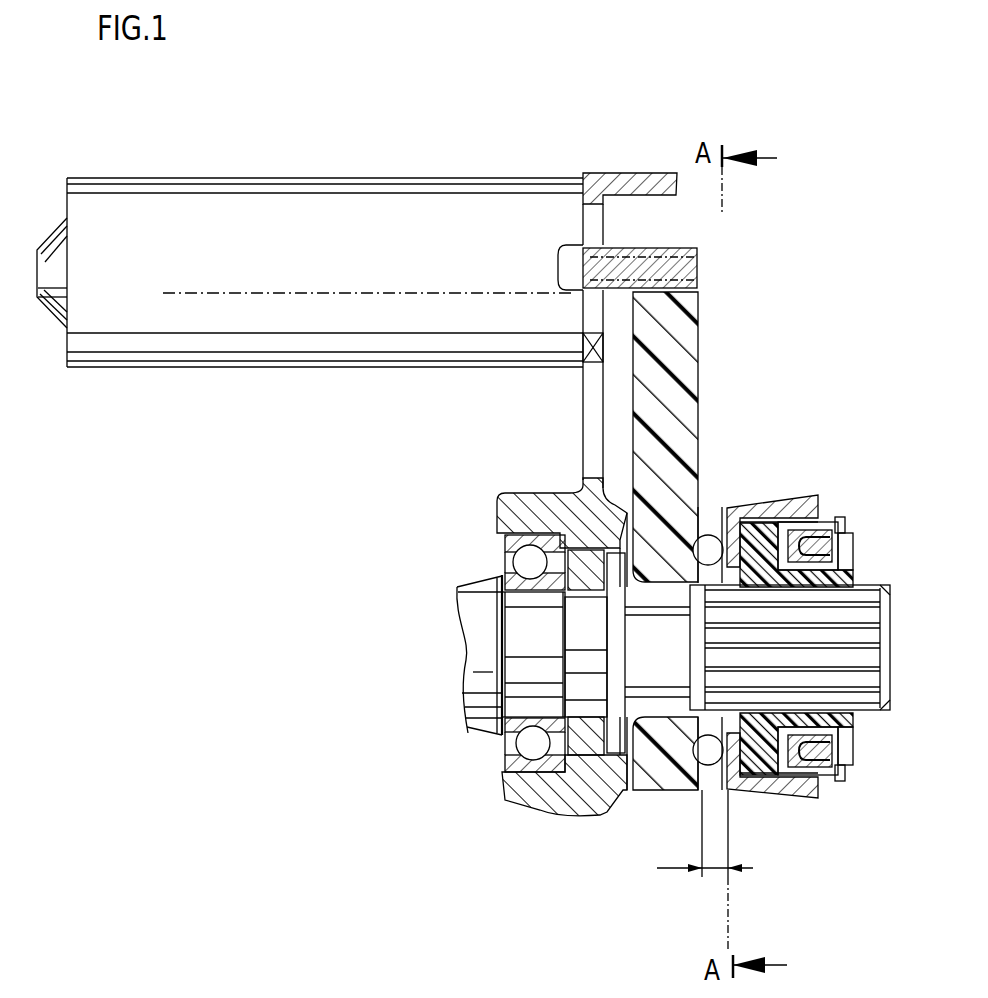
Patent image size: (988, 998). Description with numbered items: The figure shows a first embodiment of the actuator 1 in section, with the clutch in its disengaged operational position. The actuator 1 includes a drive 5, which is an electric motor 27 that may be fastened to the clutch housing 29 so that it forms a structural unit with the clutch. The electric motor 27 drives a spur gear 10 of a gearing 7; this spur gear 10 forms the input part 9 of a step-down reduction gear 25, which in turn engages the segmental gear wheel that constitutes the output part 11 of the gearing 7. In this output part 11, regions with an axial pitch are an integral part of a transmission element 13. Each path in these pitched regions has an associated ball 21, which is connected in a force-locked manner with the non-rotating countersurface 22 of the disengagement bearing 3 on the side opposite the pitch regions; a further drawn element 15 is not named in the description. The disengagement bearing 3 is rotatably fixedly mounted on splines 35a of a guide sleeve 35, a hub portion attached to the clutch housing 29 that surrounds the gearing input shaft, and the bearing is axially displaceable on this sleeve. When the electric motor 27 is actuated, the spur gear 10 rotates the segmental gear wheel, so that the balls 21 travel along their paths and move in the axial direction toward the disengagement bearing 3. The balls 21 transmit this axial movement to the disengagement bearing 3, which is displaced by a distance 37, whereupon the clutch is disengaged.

The actuator 1 is at (508, 124).
The disengagement bearing 3 is at (832, 467).
The drive 5 is at (215, 342).
The gearing 7 is at (624, 309).
The input part 9 is at (700, 256).
The spur gear 10 is at (663, 262).
The output part 11 is at (680, 362).
The transmission element 13 is at (676, 789).
The lower ball 15 is at (723, 790).
The ball 21 is at (713, 537).
The countersurface 22 is at (727, 530).
The reduction gear 25 is at (722, 292).
The electric motor 27 is at (114, 347).
The clutch housing 29 is at (640, 178).
The guide sleeve 35 is at (848, 684).
The splines 35a is at (878, 700).
The distance 37 is at (718, 870).